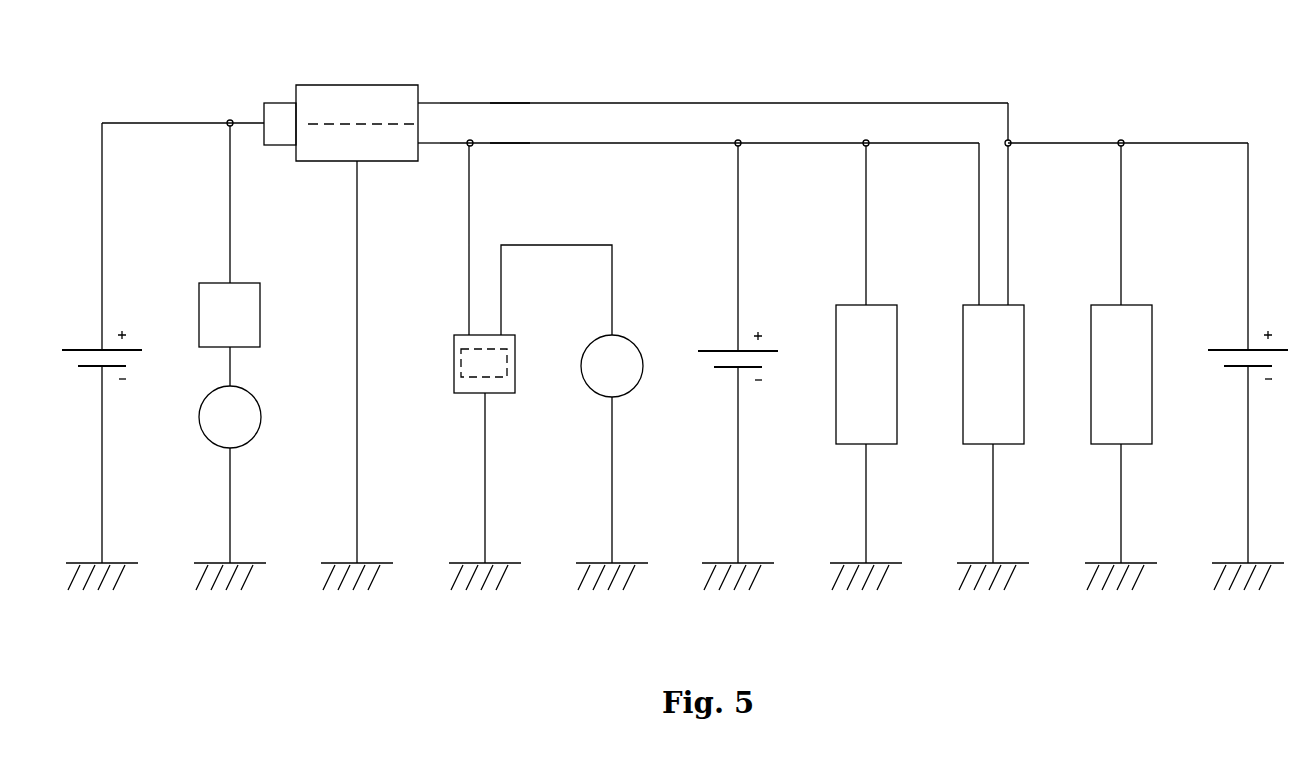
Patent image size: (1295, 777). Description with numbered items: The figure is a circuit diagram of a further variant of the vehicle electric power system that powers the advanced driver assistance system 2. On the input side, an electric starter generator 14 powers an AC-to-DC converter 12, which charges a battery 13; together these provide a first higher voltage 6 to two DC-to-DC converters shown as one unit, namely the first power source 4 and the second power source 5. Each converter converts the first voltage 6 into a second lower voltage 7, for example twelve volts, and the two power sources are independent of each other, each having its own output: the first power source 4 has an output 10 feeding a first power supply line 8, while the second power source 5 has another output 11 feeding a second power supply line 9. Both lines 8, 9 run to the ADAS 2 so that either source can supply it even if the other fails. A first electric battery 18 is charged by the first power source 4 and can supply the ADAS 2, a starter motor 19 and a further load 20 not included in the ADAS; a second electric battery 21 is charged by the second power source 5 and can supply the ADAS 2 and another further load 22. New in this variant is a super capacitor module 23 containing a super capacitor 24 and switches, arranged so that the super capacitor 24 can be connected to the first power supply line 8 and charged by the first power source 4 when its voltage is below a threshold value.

The advanced driver assistance system 2 is at (988, 415).
The first power source 4 is at (337, 143).
The second power source 5 is at (357, 107).
The first voltage 6 is at (245, 122).
The second lower voltage 7 is at (507, 102).
The first power supply line 8 is at (558, 145).
The second power supply line 9 is at (557, 102).
The output 10 is at (417, 145).
The output 11 is at (420, 102).
The AC-to-DC converter 12 is at (225, 317).
The battery 13 is at (88, 348).
The electric generator 14 is at (227, 418).
The first electric battery 18 is at (720, 368).
The starter motor 19 is at (608, 363).
The further load 20 is at (860, 415).
The second electric battery 21 is at (1228, 347).
The further load 22 is at (1117, 415).
The super capacitor module 23 is at (468, 345).
The super capacitor 24 is at (483, 365).